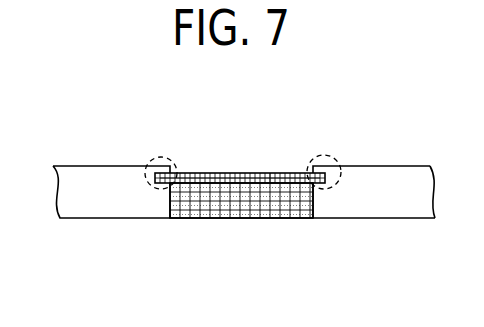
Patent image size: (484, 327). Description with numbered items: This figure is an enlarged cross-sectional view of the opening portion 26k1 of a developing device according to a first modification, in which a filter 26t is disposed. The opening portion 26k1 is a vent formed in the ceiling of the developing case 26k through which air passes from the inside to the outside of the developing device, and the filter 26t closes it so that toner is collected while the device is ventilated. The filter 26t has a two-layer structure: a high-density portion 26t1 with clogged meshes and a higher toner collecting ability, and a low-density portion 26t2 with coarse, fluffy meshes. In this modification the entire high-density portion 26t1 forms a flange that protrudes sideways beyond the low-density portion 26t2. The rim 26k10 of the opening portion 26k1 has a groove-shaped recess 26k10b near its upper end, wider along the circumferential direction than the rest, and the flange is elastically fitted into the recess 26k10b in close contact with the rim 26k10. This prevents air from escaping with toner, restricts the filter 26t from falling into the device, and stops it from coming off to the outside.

The developing case 26k is at (74, 160).
The filter 26t is at (200, 165).
The high-density portion 26t1 is at (222, 183).
The low-density portion 26t2 is at (266, 208).
The rim 26k10 is at (241, 245).
The opening portion 26k1 is at (182, 208).
The recess 26k10b is at (330, 158).